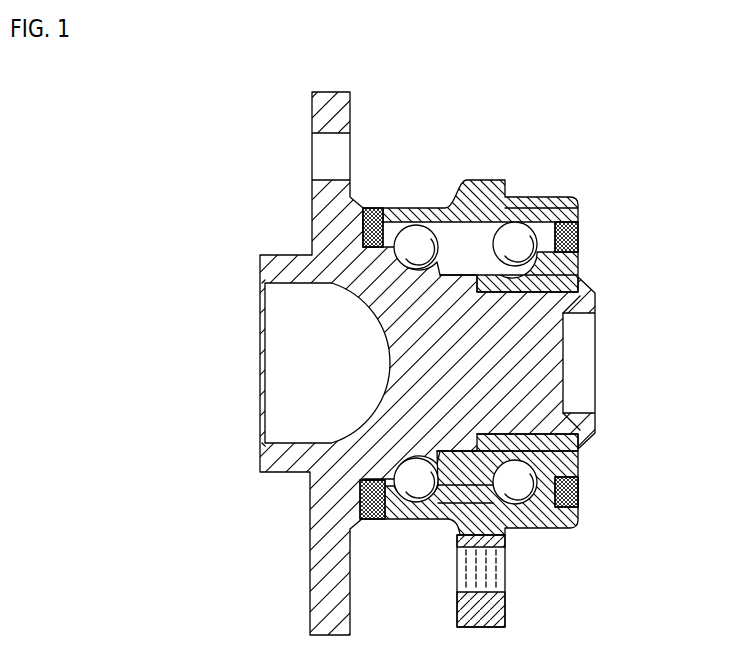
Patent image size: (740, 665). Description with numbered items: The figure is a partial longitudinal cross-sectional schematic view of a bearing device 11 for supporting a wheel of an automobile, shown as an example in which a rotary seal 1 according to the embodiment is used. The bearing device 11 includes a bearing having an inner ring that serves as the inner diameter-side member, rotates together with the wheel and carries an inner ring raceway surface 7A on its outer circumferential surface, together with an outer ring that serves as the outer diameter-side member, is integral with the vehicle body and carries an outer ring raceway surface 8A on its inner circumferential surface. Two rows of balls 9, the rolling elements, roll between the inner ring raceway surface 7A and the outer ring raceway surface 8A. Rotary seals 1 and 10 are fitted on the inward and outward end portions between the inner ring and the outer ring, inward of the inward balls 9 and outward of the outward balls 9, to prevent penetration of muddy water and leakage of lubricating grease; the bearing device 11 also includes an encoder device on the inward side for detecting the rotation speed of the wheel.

The rotary seal 1 is at (580, 228).
The inner ring raceway surface 7A is at (580, 250).
The outer ring raceway surface 8A is at (408, 225).
The balls 9 is at (502, 498).
The rotary seal 10 is at (384, 224).
The bearing device 11 is at (370, 352).